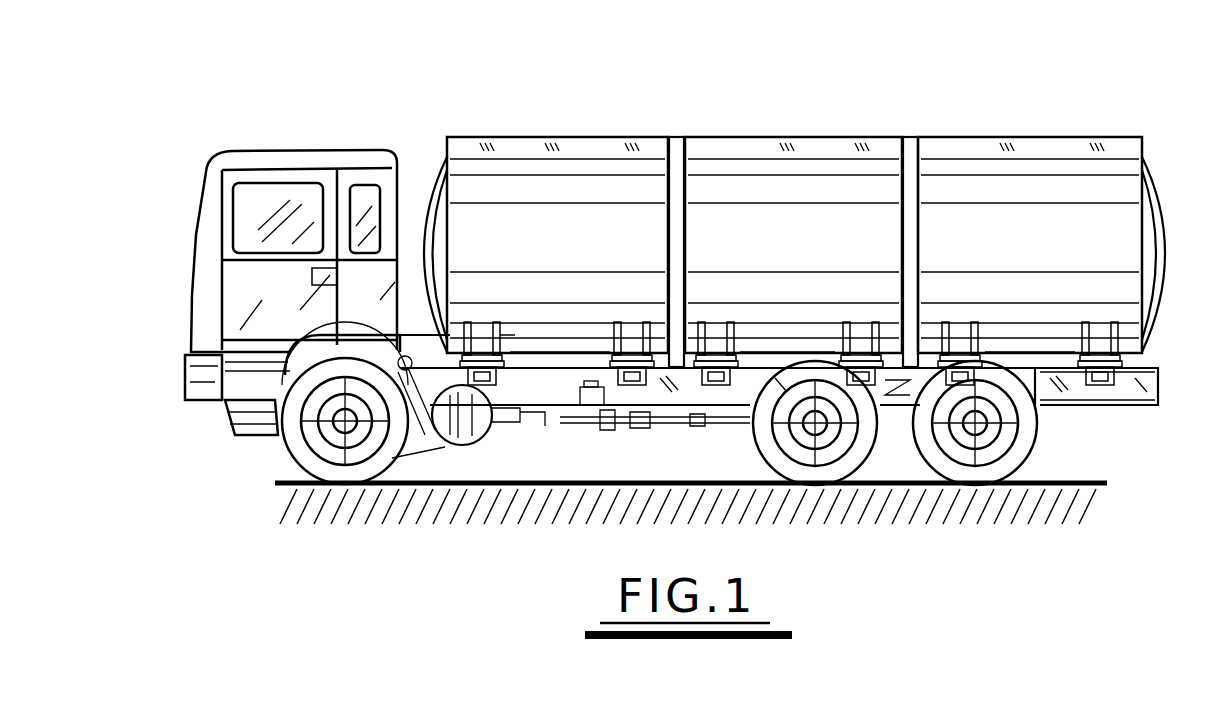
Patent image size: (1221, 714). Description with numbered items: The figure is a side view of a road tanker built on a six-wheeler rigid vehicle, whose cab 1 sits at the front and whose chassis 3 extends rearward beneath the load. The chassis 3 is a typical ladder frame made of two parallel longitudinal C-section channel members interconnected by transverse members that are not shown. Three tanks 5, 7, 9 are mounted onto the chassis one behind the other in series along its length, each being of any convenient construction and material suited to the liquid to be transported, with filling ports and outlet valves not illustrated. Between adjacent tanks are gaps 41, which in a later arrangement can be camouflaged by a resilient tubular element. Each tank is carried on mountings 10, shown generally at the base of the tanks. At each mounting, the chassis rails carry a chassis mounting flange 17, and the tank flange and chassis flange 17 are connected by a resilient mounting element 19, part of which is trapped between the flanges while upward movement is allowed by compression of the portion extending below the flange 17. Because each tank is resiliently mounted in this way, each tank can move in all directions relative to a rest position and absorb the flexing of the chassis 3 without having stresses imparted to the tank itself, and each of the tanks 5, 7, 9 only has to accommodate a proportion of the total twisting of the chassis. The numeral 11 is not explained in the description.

The cab 1 is at (255, 139).
The chassis 3 is at (980, 242).
The tank 5 is at (578, 245).
The tank 7 is at (762, 245).
The tank 9 is at (1036, 245).
The mountings 10 is at (480, 326).
The tank bottom 11 is at (550, 350).
The chassis mounting flange 17 is at (660, 414).
The resilient mounting element 19 is at (506, 335).
The gaps 41 is at (682, 133).